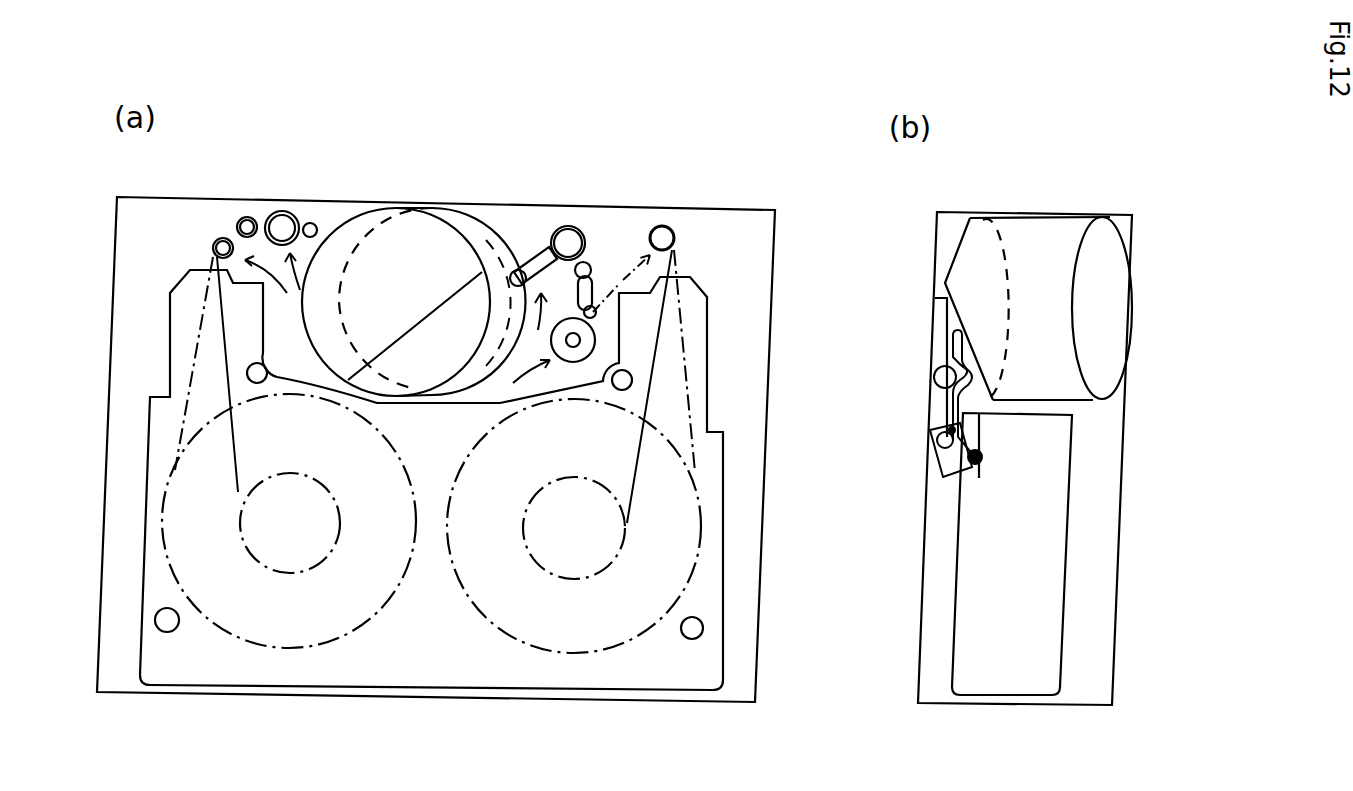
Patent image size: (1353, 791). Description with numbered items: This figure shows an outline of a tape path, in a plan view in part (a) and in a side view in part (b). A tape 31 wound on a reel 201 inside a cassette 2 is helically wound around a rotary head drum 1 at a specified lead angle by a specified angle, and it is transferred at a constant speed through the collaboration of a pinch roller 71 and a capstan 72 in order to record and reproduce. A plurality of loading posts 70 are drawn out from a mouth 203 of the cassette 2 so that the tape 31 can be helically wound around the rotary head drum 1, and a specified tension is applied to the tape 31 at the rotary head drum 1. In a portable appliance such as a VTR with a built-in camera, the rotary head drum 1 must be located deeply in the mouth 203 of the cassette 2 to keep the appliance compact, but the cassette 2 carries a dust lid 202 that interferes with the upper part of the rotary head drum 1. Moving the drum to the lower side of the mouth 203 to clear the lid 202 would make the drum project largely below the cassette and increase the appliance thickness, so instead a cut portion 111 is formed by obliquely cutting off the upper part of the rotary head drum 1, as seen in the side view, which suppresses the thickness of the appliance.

The rotary head drum 1 is at (450, 220).
The cassette 2 is at (647, 690).
The tape 31 is at (513, 315).
The loading posts 70 is at (303, 225).
The pinch roller 71 is at (588, 345).
The capstan 72 is at (593, 312).
The cut portion 111 is at (940, 290).
The reel 201 is at (267, 648).
The dust lid 202 is at (935, 417).
The mouth 203 is at (463, 397).